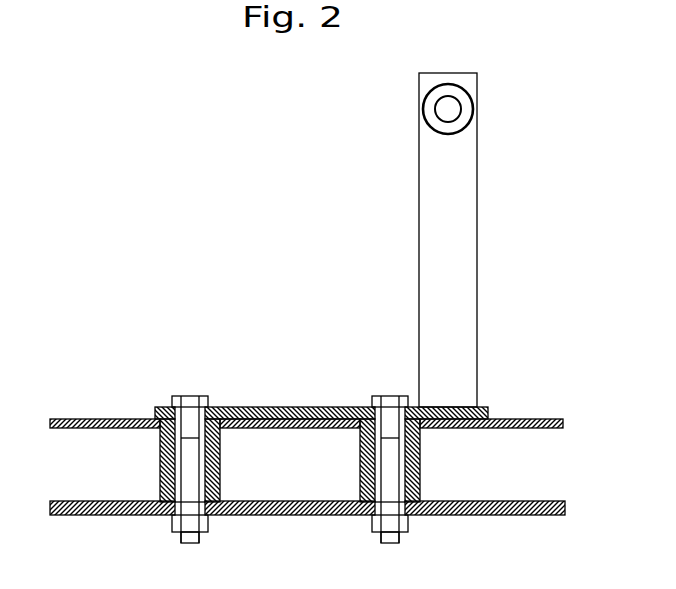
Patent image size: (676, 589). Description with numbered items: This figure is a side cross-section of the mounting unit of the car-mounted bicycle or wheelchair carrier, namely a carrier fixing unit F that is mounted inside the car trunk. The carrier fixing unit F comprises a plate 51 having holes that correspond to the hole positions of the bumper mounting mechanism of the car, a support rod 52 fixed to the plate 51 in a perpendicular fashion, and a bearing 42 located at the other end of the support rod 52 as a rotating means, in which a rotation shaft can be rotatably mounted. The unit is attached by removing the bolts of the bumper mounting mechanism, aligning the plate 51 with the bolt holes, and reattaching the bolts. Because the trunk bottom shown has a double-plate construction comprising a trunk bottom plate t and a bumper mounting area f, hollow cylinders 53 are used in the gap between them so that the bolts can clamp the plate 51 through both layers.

The carrier fixing unit F is at (183, 161).
The bearing 42 is at (473, 103).
The support rod 52 is at (477, 283).
The plate 51 is at (289, 407).
The hollow cylinder 53 is at (421, 462).
The trunk bottom plate t is at (563, 421).
The bumper mounting area f is at (565, 506).